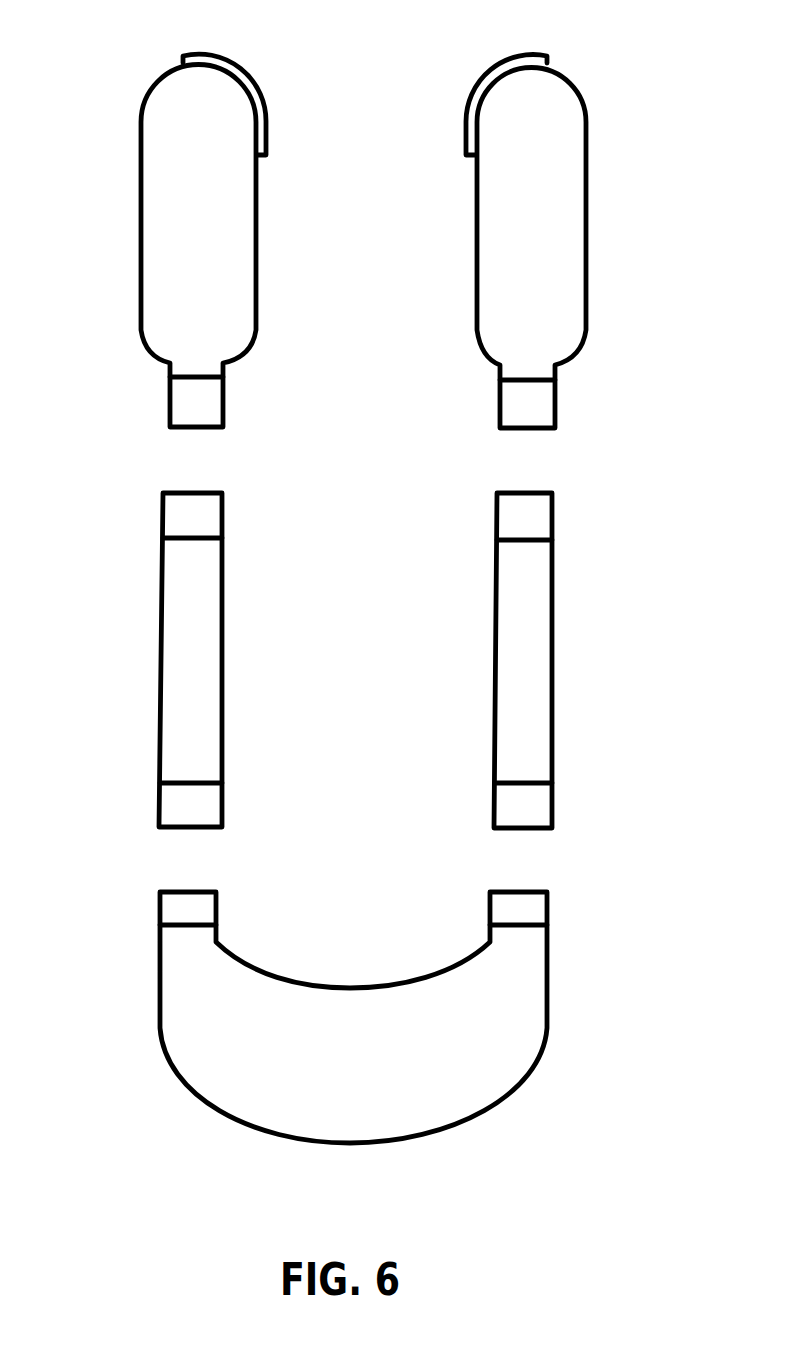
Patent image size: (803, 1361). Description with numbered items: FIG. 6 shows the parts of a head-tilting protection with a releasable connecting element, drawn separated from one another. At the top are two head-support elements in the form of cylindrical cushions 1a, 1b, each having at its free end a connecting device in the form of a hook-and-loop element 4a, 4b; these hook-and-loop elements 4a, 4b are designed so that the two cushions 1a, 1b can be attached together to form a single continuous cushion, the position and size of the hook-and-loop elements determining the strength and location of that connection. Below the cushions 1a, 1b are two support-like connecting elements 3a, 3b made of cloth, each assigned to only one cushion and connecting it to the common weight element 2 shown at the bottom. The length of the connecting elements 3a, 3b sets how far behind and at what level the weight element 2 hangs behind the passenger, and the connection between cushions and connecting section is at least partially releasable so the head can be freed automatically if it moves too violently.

The cushion 1a is at (158, 193).
The cushion 1b is at (568, 188).
The weight element 2 is at (440, 1105).
The connecting element 3a is at (177, 633).
The connecting element 3b is at (535, 618).
The hook-and-loop element 4a is at (238, 60).
The hook-and-loop element 4b is at (497, 66).